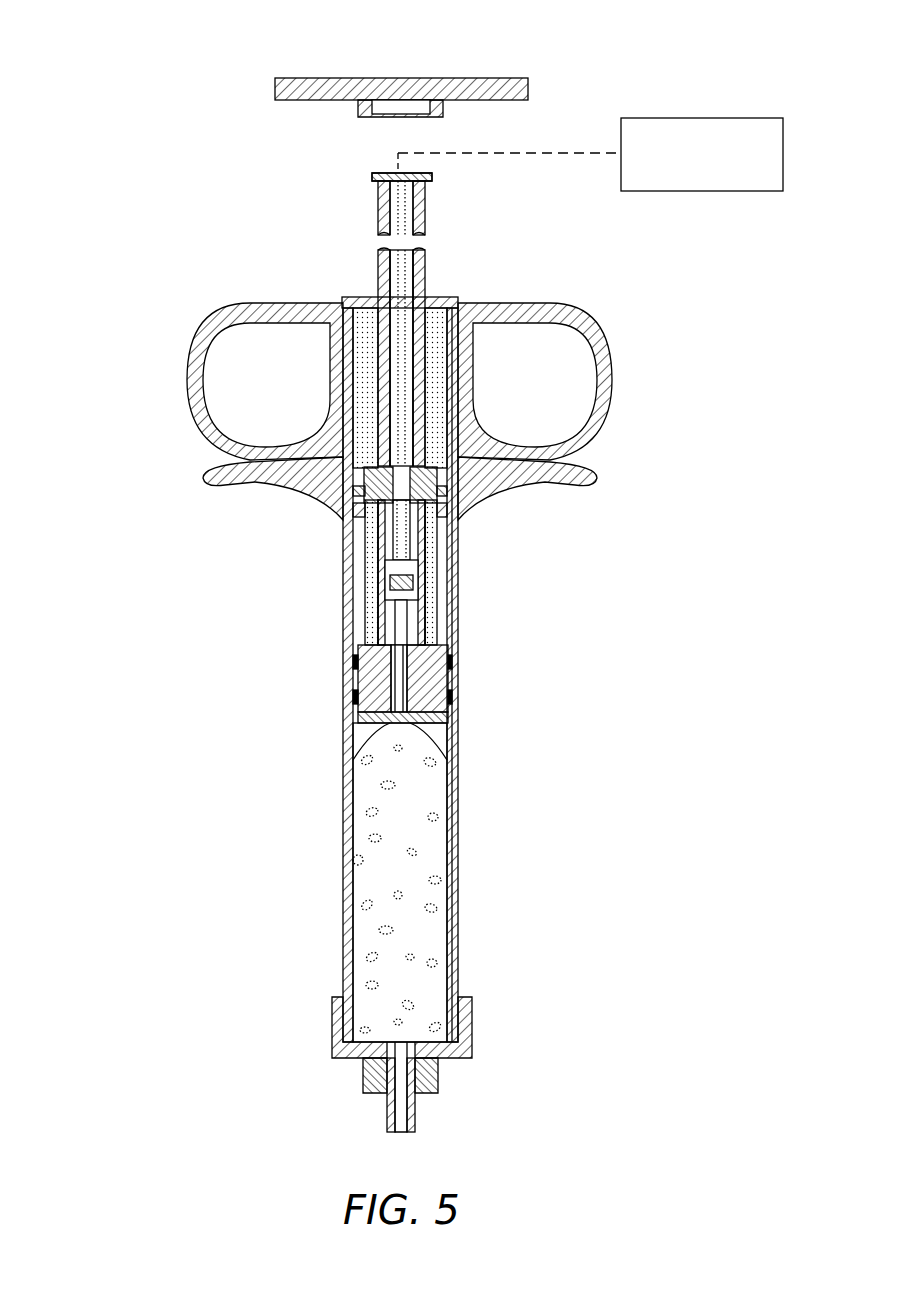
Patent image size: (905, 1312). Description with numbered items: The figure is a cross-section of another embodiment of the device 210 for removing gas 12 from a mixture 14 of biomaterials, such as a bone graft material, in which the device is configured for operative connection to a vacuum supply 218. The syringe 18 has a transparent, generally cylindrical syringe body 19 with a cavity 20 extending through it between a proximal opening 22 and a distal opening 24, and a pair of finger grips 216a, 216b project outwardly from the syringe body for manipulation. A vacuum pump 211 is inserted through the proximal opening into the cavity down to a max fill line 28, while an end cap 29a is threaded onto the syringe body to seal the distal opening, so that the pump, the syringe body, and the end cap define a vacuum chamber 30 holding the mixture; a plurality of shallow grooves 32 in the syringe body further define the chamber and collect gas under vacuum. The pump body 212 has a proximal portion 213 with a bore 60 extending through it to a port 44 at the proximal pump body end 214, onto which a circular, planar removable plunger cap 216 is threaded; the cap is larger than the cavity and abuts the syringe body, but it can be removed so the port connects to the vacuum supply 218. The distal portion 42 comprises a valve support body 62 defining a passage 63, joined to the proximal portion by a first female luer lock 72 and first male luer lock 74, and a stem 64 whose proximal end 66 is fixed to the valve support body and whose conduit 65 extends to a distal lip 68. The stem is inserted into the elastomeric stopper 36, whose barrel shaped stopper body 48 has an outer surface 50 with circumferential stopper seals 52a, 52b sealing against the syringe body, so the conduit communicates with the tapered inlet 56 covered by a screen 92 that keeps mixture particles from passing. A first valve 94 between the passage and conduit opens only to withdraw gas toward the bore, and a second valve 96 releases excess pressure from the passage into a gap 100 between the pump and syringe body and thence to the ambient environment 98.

The device 210 is at (186, 56).
The removable plunger cap 216 is at (341, 86).
The vacuum supply 218 is at (675, 118).
The port 44 is at (388, 172).
The proximal pump body end 214 is at (432, 176).
The proximal portion 213 is at (377, 208).
The vacuum pump 211 is at (302, 214).
The ambient environment 98 is at (500, 228).
The pump body 212 is at (370, 462).
The bore 60 is at (405, 438).
The syringe body 19 is at (345, 843).
The cavity 20 is at (362, 297).
The proximal opening 22 is at (448, 300).
The stopper 36 is at (375, 625).
The grooves 32 is at (458, 928).
The syringe 18 is at (375, 392).
The first finger ring 216a is at (250, 303).
The second finger ring 216b is at (545, 303).
The distal portion 42 is at (375, 556).
The valve support body 62 is at (437, 500).
The proximal end 66 is at (378, 580).
The passage 63 is at (420, 548).
The second valve 96 is at (418, 578).
The first valve 94 is at (413, 604).
The gap 100 is at (420, 584).
The conduit 65 is at (410, 640).
The stem 64 is at (418, 656).
The outer surface 50 is at (379, 688).
The stopper body 48 is at (420, 690).
The stopper seal 52a is at (358, 662).
The stopper seal 52b is at (358, 705).
The inlet 56 is at (420, 716).
The max fill line 28 is at (345, 746).
The distal lip 68 is at (390, 727).
The screen 92 is at (427, 732).
The gas 12 is at (400, 863).
The mixture 14 is at (423, 893).
The vacuum chamber 30 is at (404, 976).
The end cap 29a is at (332, 1032).
The distal opening 24 is at (447, 1060).
The first male luer lock 74 is at (360, 492).
The first female luer lock 72 is at (365, 514).